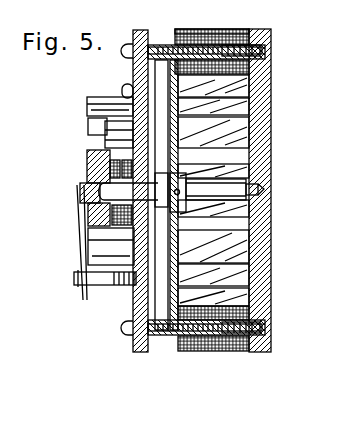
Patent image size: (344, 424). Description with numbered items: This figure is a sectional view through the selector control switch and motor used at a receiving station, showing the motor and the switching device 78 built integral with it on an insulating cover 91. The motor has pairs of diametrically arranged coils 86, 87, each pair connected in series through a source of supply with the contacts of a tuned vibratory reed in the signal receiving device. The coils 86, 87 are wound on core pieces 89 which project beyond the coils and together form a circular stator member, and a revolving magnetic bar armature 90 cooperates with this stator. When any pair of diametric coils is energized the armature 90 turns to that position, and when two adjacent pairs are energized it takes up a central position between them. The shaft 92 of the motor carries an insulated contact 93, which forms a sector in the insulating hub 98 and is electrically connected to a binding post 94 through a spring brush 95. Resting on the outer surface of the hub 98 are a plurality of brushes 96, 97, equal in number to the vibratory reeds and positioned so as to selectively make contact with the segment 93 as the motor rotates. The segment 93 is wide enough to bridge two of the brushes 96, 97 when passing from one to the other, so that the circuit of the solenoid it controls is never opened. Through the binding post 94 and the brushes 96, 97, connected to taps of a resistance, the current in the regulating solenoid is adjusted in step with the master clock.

The switching device 78 is at (70, 240).
The coils 86 is at (271, 89).
The coils 87 is at (224, 30).
The core pieces 89 is at (162, 44).
The magnetic bar armature 90 is at (162, 292).
The insulating cover 91 is at (133, 330).
The shaft 92 is at (181, 192).
The insulated contact 93 is at (87, 160).
The binding post 94 is at (95, 284).
The spring brush 95 is at (78, 215).
The brush 96 is at (88, 128).
The brush 97 is at (90, 118).
The insulating hub 98 is at (90, 233).